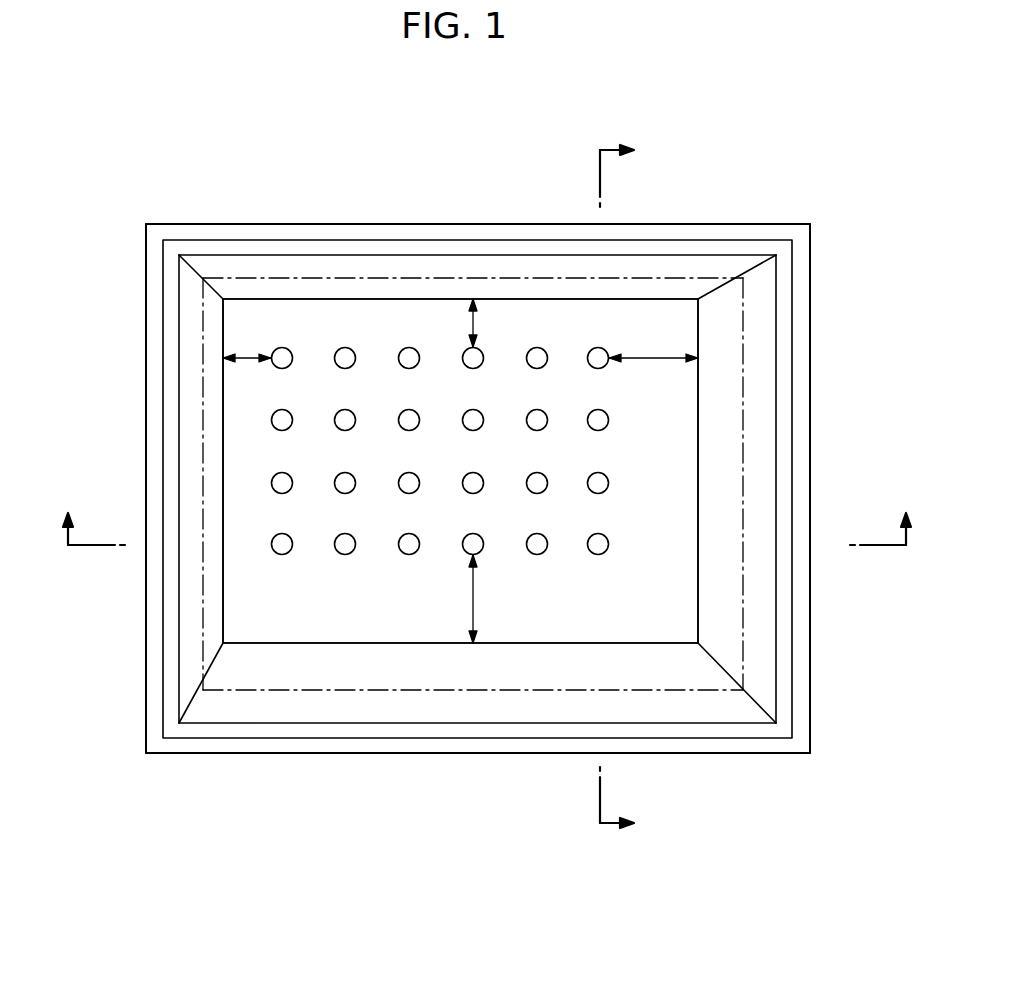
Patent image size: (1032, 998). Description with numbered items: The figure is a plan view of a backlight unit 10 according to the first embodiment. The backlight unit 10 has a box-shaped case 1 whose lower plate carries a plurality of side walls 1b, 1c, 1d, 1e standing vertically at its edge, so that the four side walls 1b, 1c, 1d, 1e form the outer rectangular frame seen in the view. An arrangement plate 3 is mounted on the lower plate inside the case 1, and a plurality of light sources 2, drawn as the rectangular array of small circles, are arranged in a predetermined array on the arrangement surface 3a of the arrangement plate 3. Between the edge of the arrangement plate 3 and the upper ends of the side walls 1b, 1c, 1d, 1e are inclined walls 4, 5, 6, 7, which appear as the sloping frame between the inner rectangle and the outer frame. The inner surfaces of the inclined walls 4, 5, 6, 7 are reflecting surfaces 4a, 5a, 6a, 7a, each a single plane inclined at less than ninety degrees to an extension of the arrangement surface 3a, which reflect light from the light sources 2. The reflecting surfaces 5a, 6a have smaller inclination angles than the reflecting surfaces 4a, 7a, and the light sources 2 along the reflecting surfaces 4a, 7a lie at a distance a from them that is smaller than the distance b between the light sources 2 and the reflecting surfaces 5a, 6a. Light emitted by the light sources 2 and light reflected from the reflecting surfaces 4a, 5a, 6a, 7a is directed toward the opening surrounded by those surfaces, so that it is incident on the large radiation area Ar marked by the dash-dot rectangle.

The backlight unit 10 is at (128, 310).
The case 1 is at (145, 386).
The side wall 1b is at (152, 692).
The side wall 1c is at (278, 748).
The side wall 1d is at (800, 502).
The side wall 1e is at (505, 230).
The light sources 2 is at (288, 365).
The arrangement plate 3 is at (360, 606).
The arrangement surface 3a is at (670, 460).
The inclined wall 4 is at (170, 490).
The reflecting surface 4a is at (212, 450).
The inclined wall 5 is at (464, 731).
The reflecting surface 5a is at (414, 662).
The inclined wall 6 is at (782, 440).
The reflecting surface 6a is at (728, 410).
The inclined wall 7 is at (352, 246).
The reflecting surface 7a is at (440, 288).
The radiation area Ar is at (688, 278).